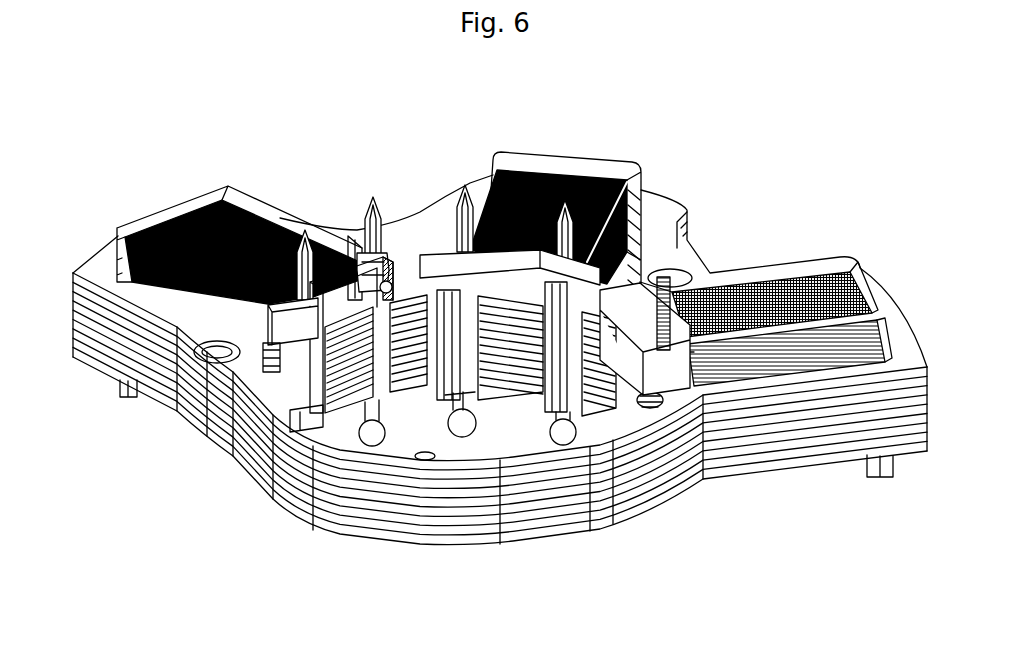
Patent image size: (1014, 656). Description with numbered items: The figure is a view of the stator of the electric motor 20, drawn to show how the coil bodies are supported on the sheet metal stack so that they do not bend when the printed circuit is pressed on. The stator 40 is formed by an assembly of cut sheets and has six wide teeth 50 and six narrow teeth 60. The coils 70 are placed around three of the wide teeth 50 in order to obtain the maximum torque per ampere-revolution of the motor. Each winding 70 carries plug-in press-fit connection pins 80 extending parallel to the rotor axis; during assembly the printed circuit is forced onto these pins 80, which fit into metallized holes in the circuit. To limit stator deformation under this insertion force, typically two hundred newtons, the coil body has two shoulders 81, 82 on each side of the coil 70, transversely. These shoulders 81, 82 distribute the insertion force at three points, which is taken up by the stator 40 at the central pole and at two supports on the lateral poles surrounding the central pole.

The electric motor 20 is at (648, 136).
The stator 40 is at (823, 477).
The wide teeth 50 is at (412, 452).
The narrow teeth 60 is at (525, 452).
The coils 70 is at (173, 222).
The plug-in connection pins 80 is at (375, 197).
The shoulder 81 is at (277, 327).
The shoulder 82 is at (400, 277).